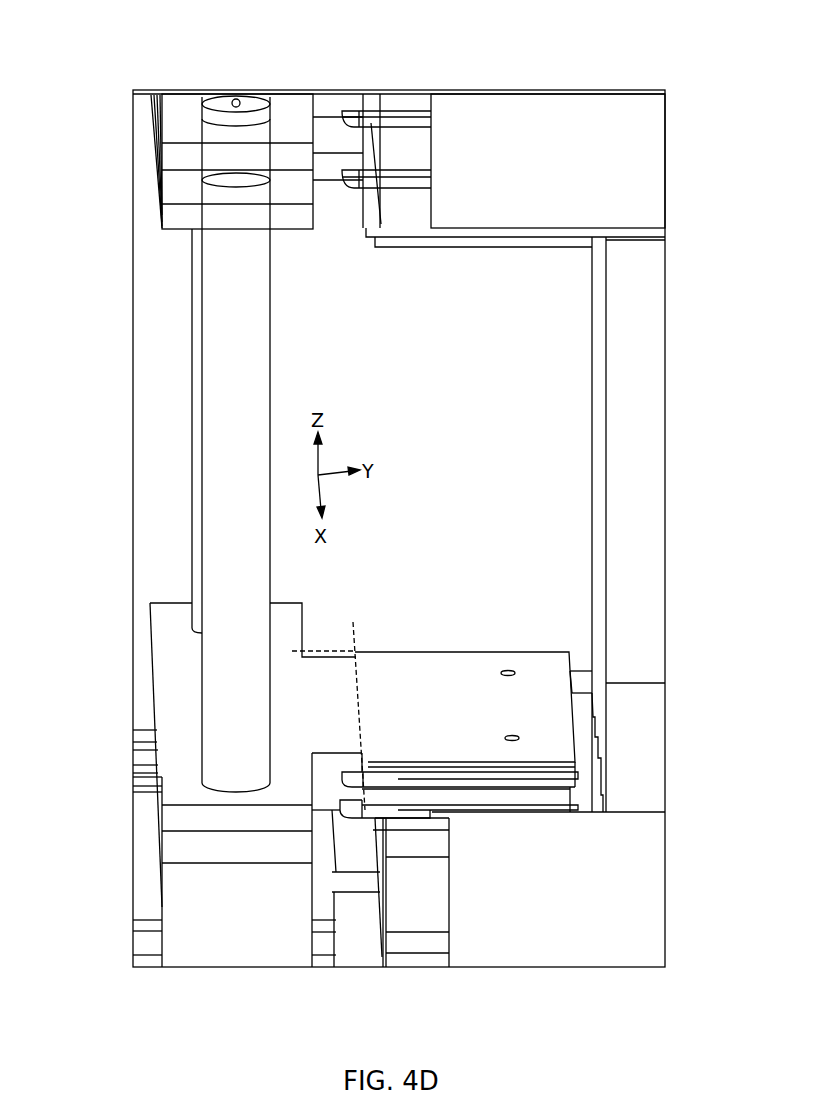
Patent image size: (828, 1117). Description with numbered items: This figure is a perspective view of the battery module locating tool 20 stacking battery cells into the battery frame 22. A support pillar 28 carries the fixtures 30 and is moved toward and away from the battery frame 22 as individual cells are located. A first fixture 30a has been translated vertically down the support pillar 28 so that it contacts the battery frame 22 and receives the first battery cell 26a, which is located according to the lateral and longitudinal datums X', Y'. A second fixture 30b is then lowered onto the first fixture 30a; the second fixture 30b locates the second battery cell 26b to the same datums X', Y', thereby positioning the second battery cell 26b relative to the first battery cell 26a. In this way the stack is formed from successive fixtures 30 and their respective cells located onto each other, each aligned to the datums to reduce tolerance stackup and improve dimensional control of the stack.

The battery module locating tool 20 is at (160, 42).
The battery frame 22 is at (600, 437).
The first battery cell 26a is at (457, 798).
The second battery cell 26b is at (371, 660).
The support pillar 28 is at (198, 442).
The fixture 30 is at (173, 125).
The first fixture 30a is at (325, 795).
The second fixture 30b is at (170, 670).